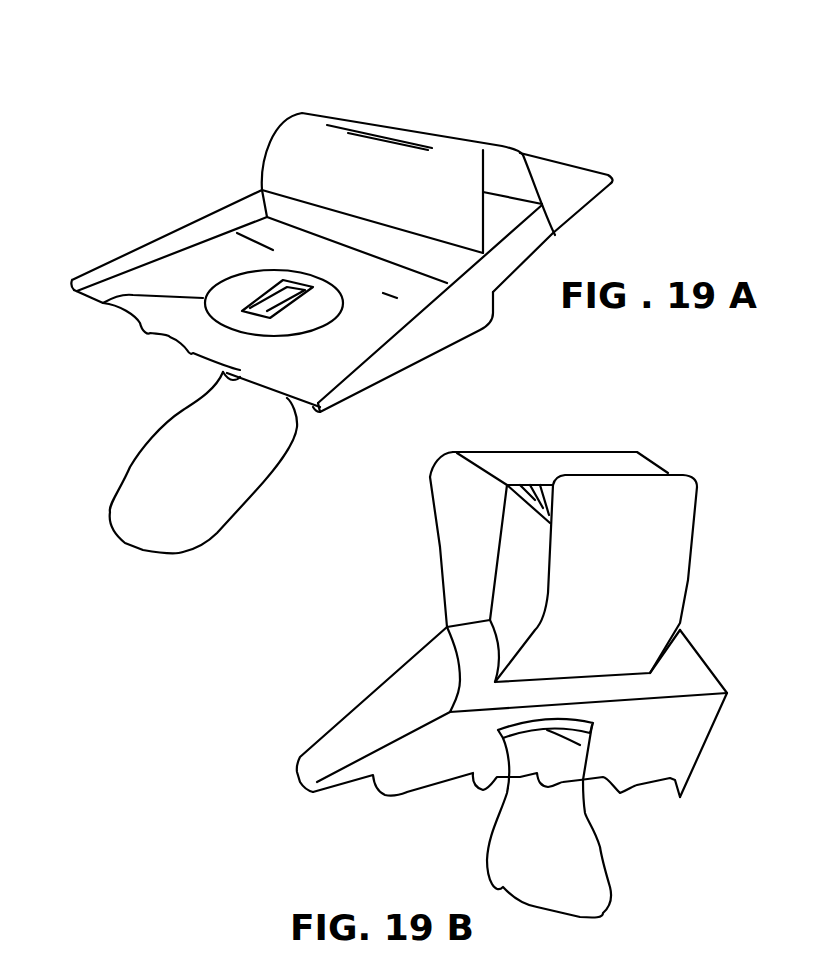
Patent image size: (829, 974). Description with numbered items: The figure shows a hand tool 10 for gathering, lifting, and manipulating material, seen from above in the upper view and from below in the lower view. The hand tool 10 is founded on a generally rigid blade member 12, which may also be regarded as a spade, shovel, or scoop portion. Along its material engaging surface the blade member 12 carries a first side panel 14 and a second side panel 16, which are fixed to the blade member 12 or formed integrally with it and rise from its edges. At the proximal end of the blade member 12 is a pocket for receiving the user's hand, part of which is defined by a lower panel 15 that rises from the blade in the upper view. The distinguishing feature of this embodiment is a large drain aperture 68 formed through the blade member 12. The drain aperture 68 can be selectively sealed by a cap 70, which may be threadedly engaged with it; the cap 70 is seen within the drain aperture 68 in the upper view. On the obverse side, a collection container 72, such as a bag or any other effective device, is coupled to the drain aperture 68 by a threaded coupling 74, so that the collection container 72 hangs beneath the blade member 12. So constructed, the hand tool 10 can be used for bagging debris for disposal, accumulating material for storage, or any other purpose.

In FIG. 19A, the hand tool 10 is at (288, 95).
In FIG. 19B, the hand tool 10 is at (584, 445).
In FIG. 19A, the blade member 12 is at (170, 335).
In FIG. 19B, the blade member 12 is at (330, 793).
In FIG. 19A, the first side panel 14 is at (408, 353).
In FIG. 19B, the first side panel 14 is at (350, 725).
In FIG. 19A, the lower panel 15 is at (567, 162).
In FIG. 19A, the second side panel 16 is at (118, 267).
In FIG. 19A, the drain aperture 68 is at (103, 303).
In FIG. 19A, the cap 70 is at (285, 312).
In FIG. 19A, the collection container 72 is at (194, 494).
In FIG. 19B, the collection container 72 is at (560, 862).
In FIG. 19B, the threaded coupling 74 is at (547, 730).